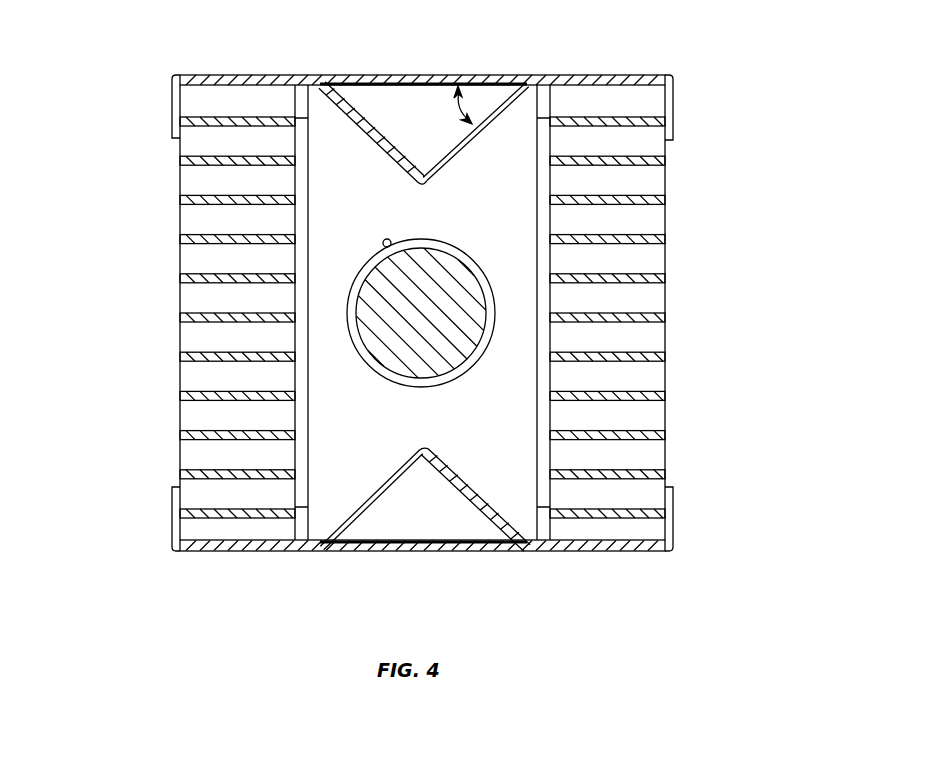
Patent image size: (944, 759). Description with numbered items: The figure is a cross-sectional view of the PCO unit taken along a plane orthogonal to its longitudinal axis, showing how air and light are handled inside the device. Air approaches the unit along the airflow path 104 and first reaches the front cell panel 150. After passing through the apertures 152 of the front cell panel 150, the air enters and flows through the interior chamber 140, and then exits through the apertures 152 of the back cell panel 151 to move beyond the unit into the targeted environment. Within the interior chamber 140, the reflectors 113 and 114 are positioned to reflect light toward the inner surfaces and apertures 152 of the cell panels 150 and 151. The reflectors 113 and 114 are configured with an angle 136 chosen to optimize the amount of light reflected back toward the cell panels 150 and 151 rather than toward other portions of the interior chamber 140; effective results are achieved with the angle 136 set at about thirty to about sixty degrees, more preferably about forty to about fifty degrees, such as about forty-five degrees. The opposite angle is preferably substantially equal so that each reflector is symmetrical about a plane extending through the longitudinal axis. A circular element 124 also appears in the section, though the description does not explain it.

The airflow path 104 is at (48, 299).
The reflector 113 is at (378, 497).
The reflector 114 is at (377, 127).
The heat pipe / circular conduit 124 is at (382, 272).
The angle 136 is at (483, 90).
The interior chamber 140 is at (513, 143).
The front cell panel 150 is at (638, 400).
The back cell panel 151 is at (197, 396).
The apertures 152 is at (647, 181).